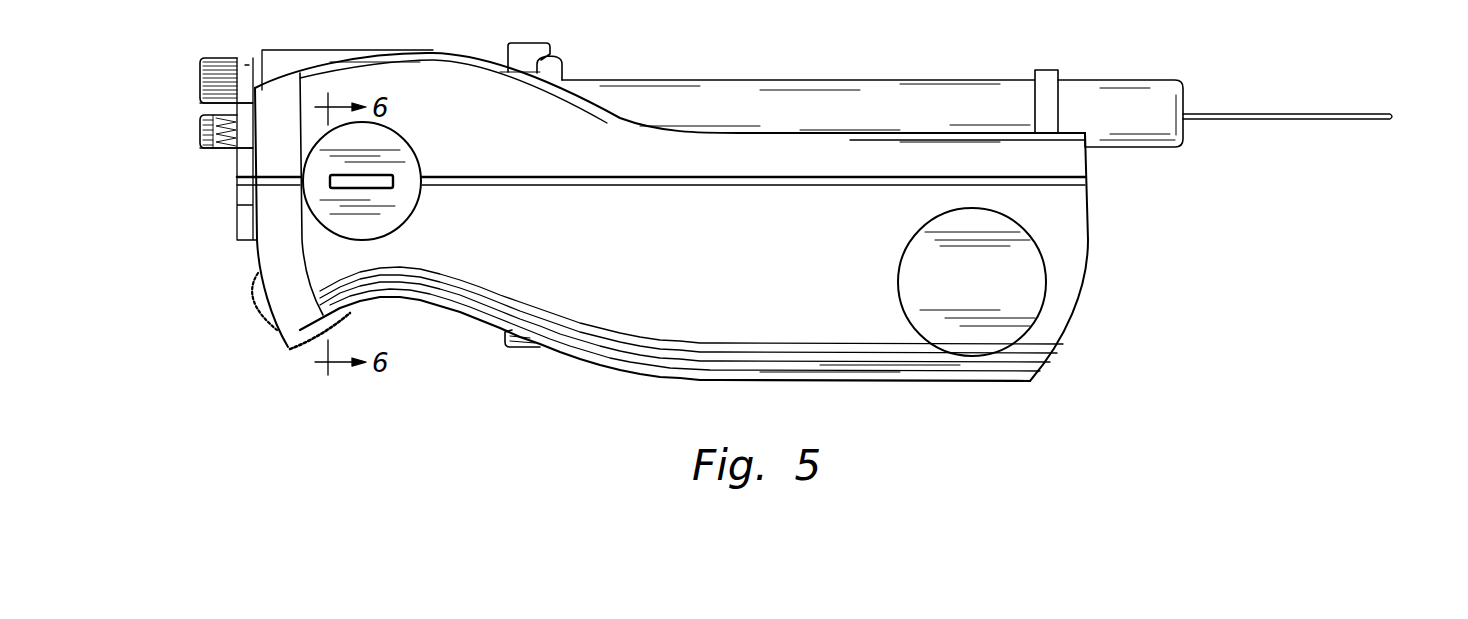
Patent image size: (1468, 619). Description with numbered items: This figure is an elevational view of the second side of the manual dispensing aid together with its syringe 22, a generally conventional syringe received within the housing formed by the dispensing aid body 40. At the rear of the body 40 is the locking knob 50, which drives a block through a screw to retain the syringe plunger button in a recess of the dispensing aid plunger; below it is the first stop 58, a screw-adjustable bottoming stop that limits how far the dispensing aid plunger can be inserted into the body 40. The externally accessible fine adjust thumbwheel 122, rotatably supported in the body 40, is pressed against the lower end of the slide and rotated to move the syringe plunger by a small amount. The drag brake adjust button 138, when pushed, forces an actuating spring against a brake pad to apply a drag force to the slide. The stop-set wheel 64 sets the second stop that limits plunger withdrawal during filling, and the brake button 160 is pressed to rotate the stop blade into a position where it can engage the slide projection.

The syringe 22 is at (1133, 148).
The dispensing aid body 40 is at (1088, 235).
The locking knob 50 is at (225, 57).
The first stop 58 is at (200, 130).
The stop-set wheel 64 is at (527, 348).
The fine adjust thumbwheel 122 is at (277, 328).
The drag brake adjust button 138 is at (400, 196).
The brake button 160 is at (1002, 310).